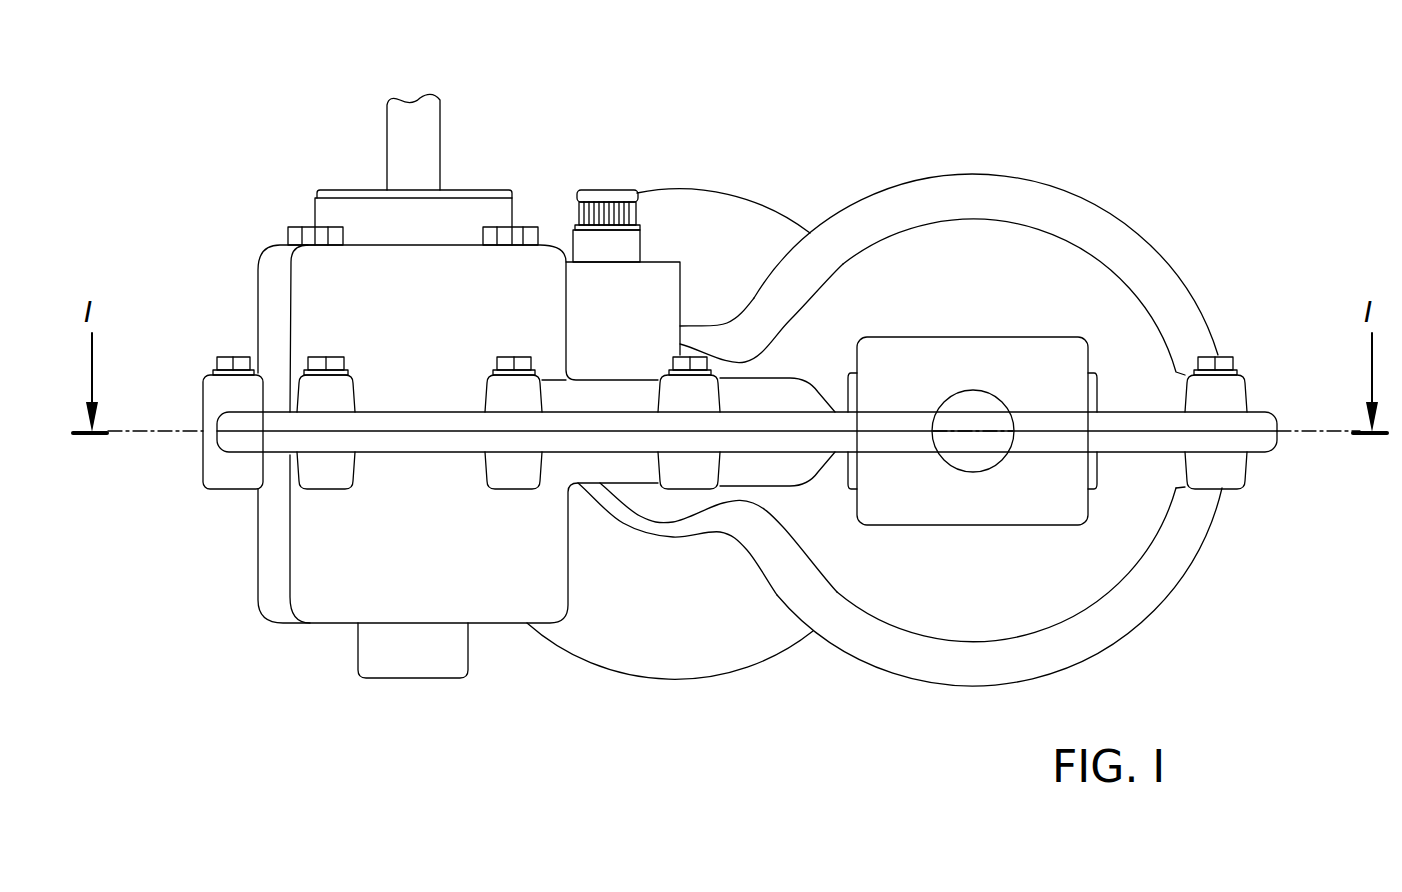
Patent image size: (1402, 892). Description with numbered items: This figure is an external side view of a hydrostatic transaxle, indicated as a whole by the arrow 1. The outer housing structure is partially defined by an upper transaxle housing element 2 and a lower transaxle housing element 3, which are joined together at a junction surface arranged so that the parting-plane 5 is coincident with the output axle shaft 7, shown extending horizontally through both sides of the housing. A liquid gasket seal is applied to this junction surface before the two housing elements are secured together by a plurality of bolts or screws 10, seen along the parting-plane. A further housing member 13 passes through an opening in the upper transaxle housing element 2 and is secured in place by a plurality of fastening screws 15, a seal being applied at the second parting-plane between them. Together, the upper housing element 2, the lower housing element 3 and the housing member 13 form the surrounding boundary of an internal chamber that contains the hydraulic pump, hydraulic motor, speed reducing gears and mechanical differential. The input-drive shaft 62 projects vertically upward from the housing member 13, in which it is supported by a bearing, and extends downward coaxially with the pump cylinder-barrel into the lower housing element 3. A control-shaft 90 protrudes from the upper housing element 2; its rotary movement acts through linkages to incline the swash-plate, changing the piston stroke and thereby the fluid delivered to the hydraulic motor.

The hydrostatic transaxle 1 is at (768, 92).
The upper transaxle housing element 2 is at (424, 297).
The lower transaxle housing element 3 is at (427, 499).
The parting-plane 5 is at (156, 434).
The output axle shaft 7 is at (982, 429).
The bolts or screws 10 is at (244, 364).
The housing member 13 is at (430, 239).
The fastening screws 15 is at (318, 232).
The input-drive shaft 62 is at (436, 147).
The control-shaft 90 is at (607, 218).